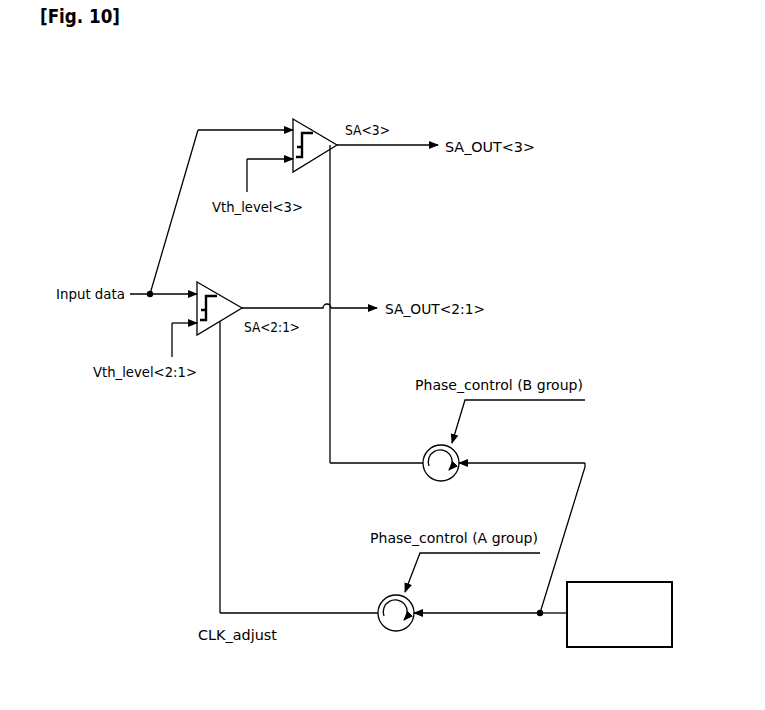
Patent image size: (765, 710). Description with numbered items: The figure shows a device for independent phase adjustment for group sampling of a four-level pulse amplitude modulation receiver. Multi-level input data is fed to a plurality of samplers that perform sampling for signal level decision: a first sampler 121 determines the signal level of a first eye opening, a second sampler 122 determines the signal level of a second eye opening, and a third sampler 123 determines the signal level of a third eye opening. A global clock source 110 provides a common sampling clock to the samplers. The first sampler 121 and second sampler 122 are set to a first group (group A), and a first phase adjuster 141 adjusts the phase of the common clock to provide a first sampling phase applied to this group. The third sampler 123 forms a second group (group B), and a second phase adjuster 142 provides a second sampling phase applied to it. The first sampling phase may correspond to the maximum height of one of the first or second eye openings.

The global clock source 110 is at (589, 647).
The first sampler 121 is at (231, 289).
The second sampler 122 is at (206, 283).
The third sampler 123 is at (301, 119).
The first phase adjuster 141 is at (382, 602).
The second phase adjuster 142 is at (427, 452).